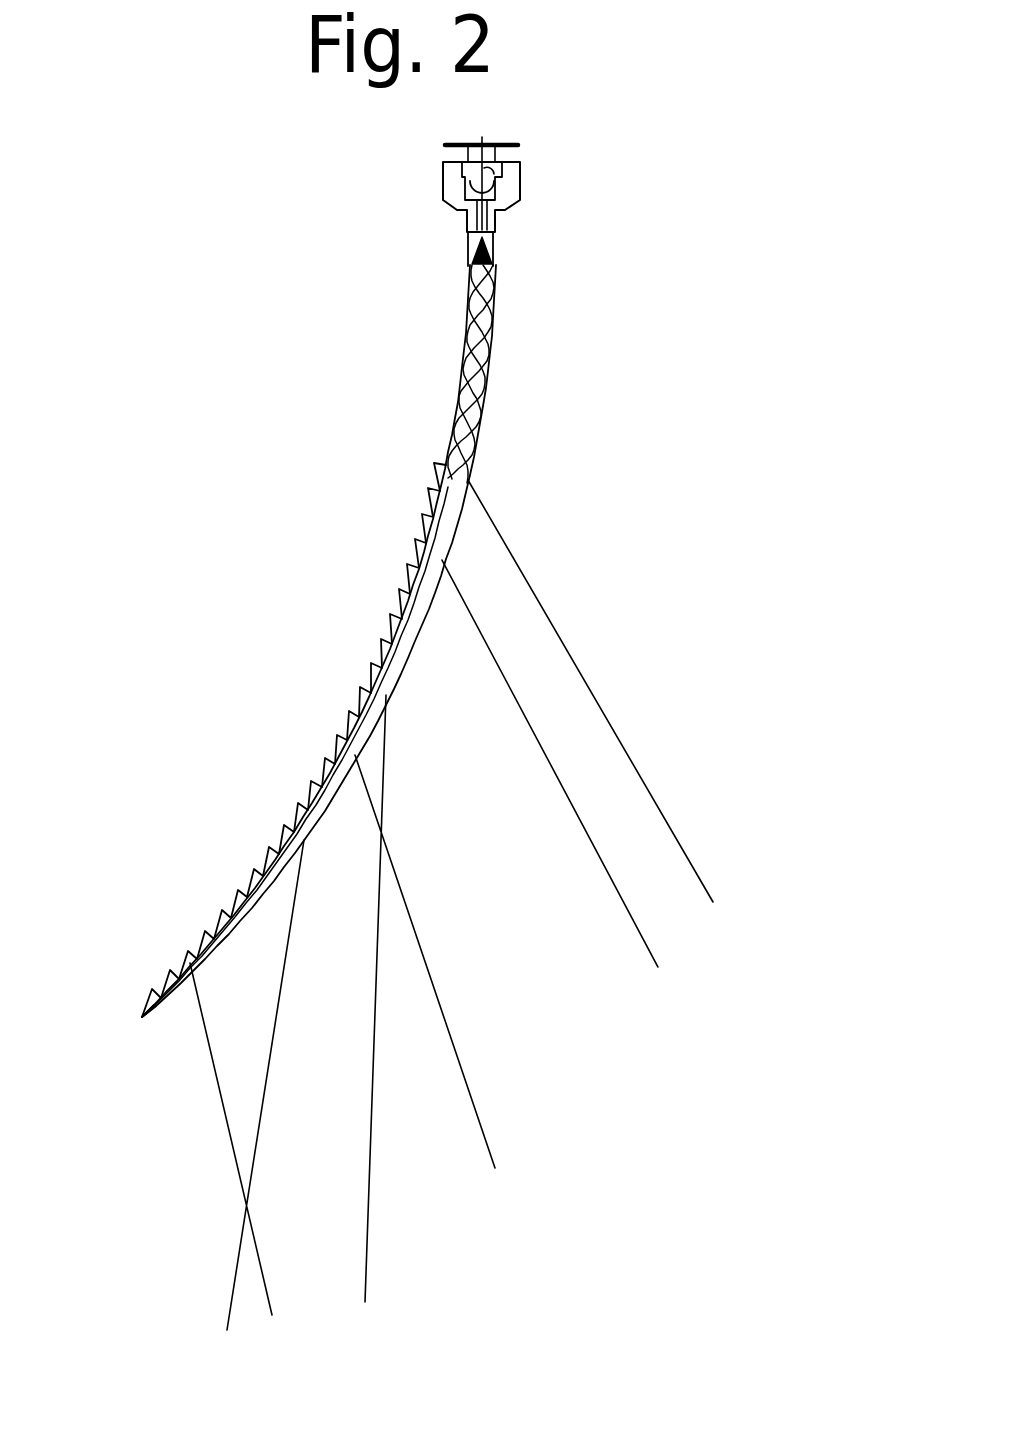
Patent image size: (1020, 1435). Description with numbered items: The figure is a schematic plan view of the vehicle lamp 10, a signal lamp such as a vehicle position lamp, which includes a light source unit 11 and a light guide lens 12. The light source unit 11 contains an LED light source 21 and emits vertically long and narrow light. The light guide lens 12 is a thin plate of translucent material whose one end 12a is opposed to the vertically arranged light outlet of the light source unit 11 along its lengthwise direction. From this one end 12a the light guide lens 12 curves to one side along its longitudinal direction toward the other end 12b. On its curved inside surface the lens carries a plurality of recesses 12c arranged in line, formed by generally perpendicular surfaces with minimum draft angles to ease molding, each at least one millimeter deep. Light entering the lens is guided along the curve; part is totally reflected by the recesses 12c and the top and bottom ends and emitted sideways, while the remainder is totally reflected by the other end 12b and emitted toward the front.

The vehicle lamp 10 is at (615, 160).
The light source unit 11 is at (443, 185).
The LED light source 21 is at (490, 173).
The light guide lens 12 is at (483, 417).
The one end 12a is at (495, 225).
The other end 12b is at (143, 992).
The recesses 12c is at (227, 902).